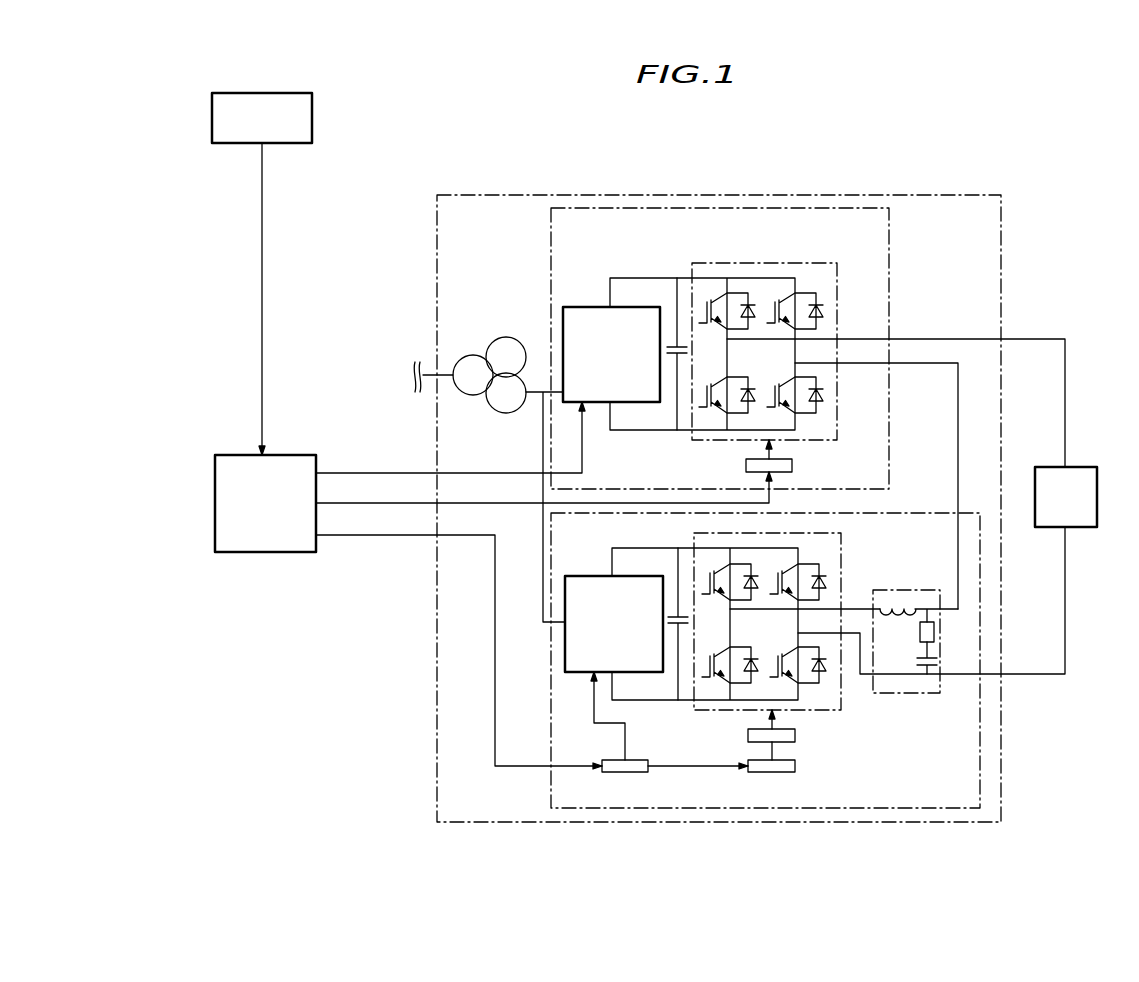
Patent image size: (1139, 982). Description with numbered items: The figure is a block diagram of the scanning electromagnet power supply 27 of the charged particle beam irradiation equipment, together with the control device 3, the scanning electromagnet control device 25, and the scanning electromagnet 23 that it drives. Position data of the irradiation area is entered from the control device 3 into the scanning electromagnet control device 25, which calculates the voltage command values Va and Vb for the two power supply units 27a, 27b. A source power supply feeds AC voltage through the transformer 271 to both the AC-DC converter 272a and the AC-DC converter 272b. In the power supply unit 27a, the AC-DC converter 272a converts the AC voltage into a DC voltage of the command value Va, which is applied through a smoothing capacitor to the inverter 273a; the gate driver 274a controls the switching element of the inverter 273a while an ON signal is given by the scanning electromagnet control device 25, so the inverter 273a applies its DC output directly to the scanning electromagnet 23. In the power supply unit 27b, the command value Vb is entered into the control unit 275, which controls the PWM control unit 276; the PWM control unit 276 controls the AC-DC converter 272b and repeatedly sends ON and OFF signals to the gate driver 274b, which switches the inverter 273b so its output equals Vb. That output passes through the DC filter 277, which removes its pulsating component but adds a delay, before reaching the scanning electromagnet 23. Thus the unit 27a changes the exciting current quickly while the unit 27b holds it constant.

The control device 3 is at (262, 93).
The scanning electromagnet control device 25 is at (262, 552).
The scanning electromagnet 23 is at (1080, 467).
The scanning electromagnet power supply 27 is at (1001, 257).
The power supply unit 27a is at (889, 298).
The power supply unit 27b is at (925, 513).
The transformer 271 is at (503, 332).
The AC-DC converter 272a is at (585, 307).
The AC-DC converter 272b is at (582, 576).
The inverter 273a is at (837, 298).
The inverter 273b is at (841, 568).
The gate driver 274a is at (746, 463).
The gate driver 274b is at (795, 735).
The control unit 275 is at (642, 760).
The PWM control unit 276 is at (795, 766).
The DC filter 277 is at (905, 590).